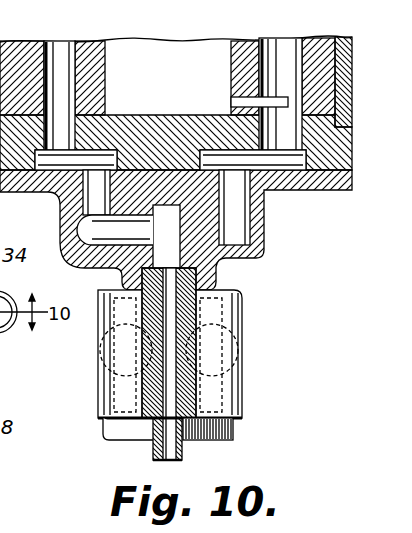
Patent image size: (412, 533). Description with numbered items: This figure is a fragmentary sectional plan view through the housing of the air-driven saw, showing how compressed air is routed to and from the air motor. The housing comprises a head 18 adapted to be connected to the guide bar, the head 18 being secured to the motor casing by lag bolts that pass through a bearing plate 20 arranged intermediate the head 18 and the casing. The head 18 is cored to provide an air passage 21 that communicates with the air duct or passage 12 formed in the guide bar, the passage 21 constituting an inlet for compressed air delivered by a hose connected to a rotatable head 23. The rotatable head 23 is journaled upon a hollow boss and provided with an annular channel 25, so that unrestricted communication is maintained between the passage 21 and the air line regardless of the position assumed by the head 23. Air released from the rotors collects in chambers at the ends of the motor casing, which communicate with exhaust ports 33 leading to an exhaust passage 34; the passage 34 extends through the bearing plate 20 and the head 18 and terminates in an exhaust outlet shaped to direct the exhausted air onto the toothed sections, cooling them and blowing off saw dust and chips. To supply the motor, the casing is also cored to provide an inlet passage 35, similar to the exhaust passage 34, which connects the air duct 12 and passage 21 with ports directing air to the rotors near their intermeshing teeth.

The air duct or passage 12 is at (150, 440).
The head 18 is at (237, 263).
The bearing plate 20 is at (166, 122).
The air passage 21 is at (113, 273).
The rotatable head 23 is at (105, 378).
The annular channel 25 is at (110, 348).
The exhaust port 33 is at (234, 101).
The exhaust passage 34 is at (273, 50).
The inlet passage 35 is at (55, 50).